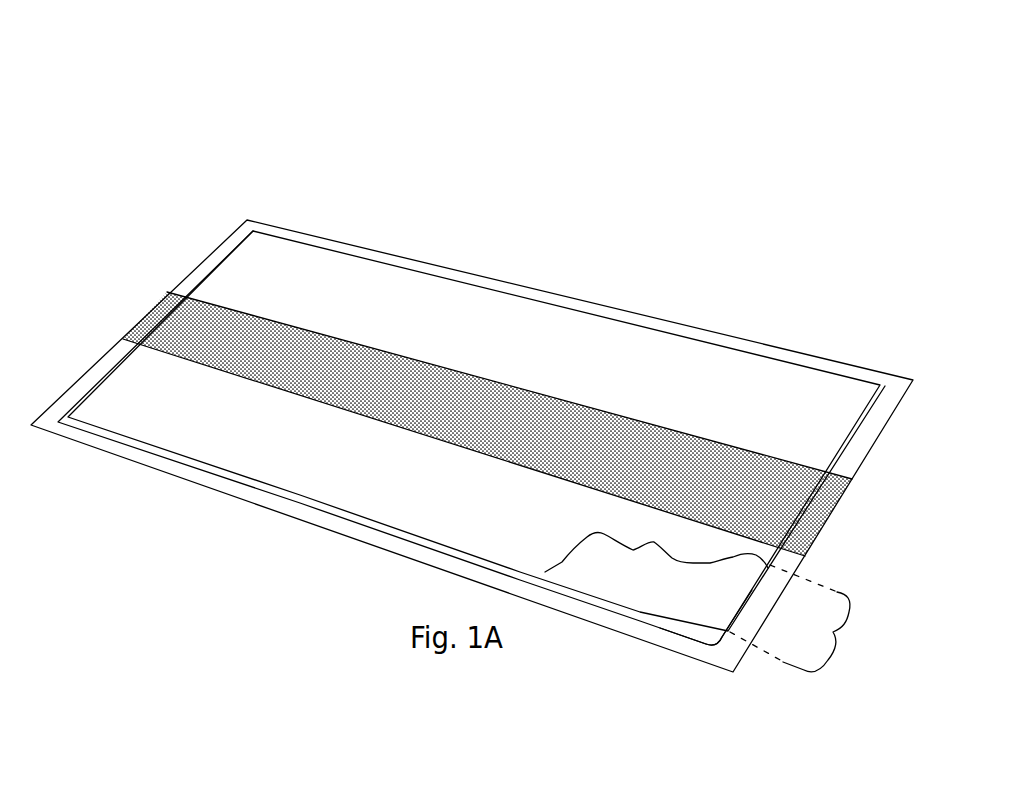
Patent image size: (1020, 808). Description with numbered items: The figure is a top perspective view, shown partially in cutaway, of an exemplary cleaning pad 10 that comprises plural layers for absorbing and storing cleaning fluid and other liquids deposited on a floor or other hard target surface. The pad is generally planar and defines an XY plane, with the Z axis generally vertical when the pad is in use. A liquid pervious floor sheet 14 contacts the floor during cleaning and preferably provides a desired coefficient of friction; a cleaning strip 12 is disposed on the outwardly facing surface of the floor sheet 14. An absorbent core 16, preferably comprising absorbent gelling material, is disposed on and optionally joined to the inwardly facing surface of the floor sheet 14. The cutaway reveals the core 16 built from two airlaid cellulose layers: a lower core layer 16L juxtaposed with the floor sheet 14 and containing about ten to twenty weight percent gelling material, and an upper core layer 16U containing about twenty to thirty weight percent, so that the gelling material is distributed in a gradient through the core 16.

The cleaning pad 10 is at (581, 101).
The cleaning strip 12 is at (188, 325).
The floor sheet 14 is at (523, 340).
The absorbent core 16 is at (802, 618).
The lower core layer 16L is at (656, 562).
The upper core layer 16U is at (693, 618).